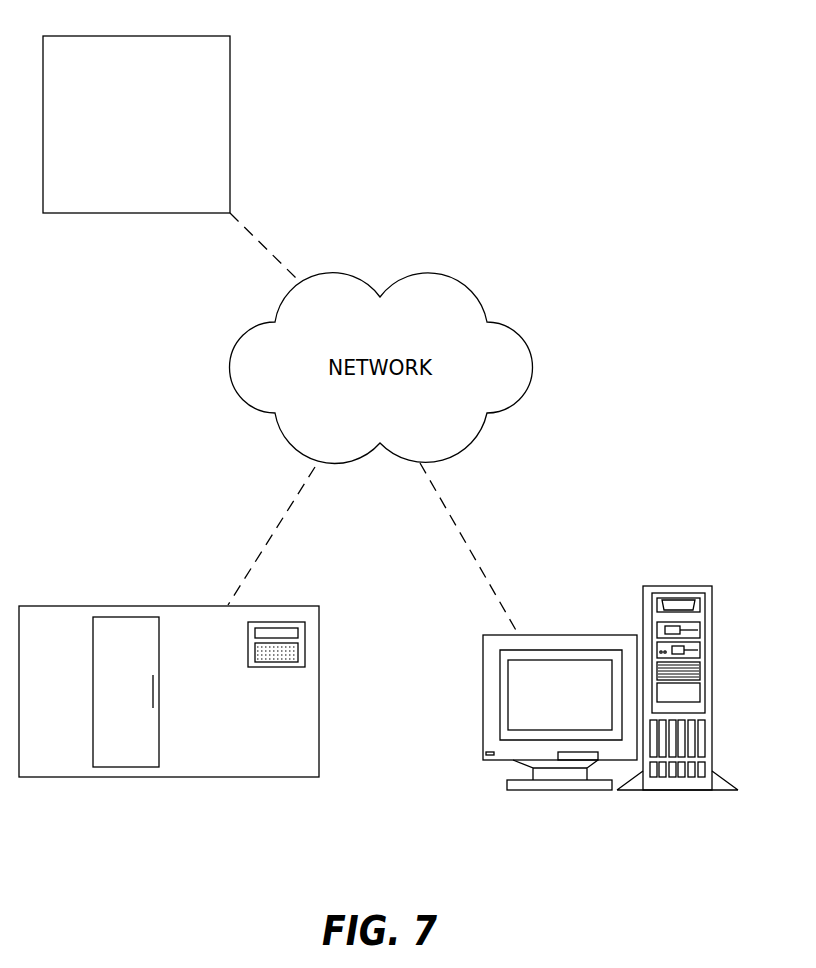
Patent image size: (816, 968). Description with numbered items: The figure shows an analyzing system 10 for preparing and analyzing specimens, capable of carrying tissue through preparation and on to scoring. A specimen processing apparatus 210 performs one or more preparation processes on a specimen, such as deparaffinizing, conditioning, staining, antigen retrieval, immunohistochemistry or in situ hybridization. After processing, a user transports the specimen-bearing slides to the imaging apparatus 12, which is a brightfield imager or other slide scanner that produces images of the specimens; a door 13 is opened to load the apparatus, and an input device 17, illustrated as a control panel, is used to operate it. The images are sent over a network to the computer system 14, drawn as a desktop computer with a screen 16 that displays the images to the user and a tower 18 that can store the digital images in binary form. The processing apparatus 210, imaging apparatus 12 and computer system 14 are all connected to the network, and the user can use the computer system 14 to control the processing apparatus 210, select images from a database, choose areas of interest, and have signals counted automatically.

The analyzing system 10 is at (640, 323).
The specimen processing apparatus 210 is at (230, 100).
The imaging apparatus 12 is at (138, 572).
The door 13 is at (132, 753).
The input device 17 is at (290, 622).
The computer system 14 is at (626, 570).
The screen 16 is at (532, 635).
The tower 18 is at (712, 643).